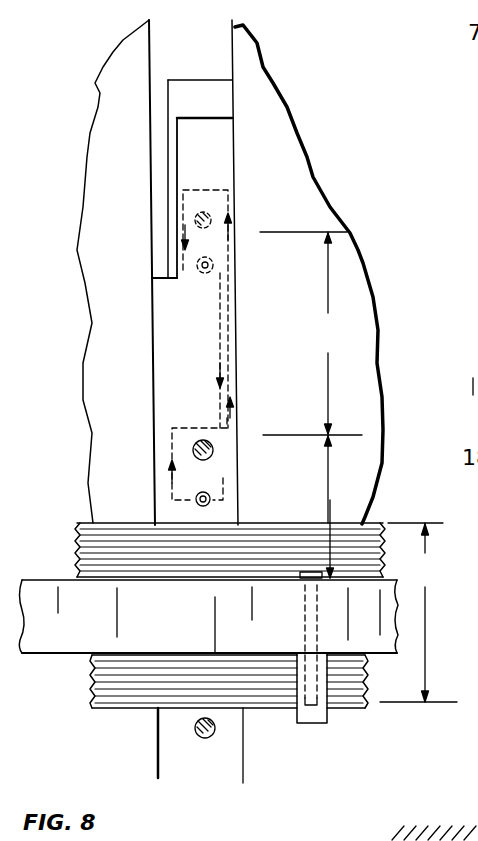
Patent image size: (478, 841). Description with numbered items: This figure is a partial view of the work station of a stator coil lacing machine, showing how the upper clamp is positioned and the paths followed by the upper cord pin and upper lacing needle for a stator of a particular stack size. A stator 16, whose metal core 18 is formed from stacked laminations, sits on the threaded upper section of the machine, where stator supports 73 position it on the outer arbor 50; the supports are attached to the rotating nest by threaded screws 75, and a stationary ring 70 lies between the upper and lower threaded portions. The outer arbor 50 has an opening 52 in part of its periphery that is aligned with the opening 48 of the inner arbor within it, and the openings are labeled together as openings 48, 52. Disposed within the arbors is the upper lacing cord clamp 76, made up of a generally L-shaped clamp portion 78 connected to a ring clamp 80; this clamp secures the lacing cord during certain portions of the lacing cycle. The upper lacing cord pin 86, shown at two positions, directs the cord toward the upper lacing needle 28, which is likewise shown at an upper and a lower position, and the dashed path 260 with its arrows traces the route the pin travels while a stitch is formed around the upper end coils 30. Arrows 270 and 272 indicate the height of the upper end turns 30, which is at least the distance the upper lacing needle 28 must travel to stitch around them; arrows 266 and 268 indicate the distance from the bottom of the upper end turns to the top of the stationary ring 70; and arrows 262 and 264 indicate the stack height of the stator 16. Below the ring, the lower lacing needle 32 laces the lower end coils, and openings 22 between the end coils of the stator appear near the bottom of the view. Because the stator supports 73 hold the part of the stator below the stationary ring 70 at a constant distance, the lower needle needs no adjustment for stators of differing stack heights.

The outer arbor 50 is at (122, 78).
The opening 48 is at (236, 272).
The opening 52 is at (167, 332).
The L-shaped clamp portion 78 is at (168, 200).
The upper lacing cord clamp 76 is at (172, 62).
The ring clamp 80 is at (222, 97).
The path 260 is at (218, 333).
The upper lacing needle 28 is at (130, 437).
The upper lacing cord pin 86 is at (213, 263).
The arrow 270 is at (328, 280).
The arrow 272 is at (328, 382).
The arrow 266 is at (328, 470).
The arrow 268 is at (330, 510).
The stator 16 is at (215, 522).
The metal core 18 is at (363, 533).
The stationary ring 70 is at (62, 633).
The upper end coils 30 is at (229, 746).
The stator supports 73 is at (320, 723).
The threaded screws 75 is at (312, 707).
The arrow 262 is at (428, 560).
The arrow 264 is at (428, 655).
The lower lacing needle 32 is at (196, 733).
The openings 22 is at (411, 827).